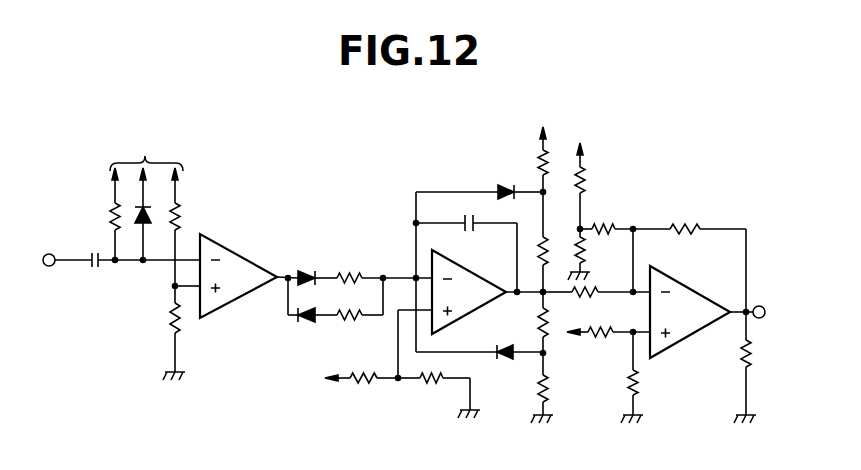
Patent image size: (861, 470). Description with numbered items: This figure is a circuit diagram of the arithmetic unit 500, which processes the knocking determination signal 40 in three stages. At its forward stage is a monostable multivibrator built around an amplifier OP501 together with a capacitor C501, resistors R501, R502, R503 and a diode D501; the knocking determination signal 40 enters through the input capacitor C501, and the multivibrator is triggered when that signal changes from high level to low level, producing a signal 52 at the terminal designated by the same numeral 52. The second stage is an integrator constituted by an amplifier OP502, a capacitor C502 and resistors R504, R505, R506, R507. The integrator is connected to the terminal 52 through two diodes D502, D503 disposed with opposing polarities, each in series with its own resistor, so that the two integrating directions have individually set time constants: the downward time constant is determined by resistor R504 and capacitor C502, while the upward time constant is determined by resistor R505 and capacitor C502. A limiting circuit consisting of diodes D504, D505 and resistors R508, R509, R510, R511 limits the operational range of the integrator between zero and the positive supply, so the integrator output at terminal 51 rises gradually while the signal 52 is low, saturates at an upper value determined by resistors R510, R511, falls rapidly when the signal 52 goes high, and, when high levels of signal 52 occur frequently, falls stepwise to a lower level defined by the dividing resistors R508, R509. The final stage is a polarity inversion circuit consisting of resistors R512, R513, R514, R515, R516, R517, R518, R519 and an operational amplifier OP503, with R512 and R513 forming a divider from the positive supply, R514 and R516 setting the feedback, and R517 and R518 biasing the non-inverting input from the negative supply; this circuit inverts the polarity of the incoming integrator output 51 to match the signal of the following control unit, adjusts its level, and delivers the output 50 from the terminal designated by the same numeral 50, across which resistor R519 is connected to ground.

The arithmetic unit 500 is at (300, 177).
The knocking determination signal 40 is at (49, 266).
The terminal (monostable multivibrator output signal) 52 is at (287, 275).
The terminal (integrator output signal) 51 is at (557, 283).
The terminal (output) 50 is at (763, 318).
The capacitor C501 is at (95, 268).
The capacitor C502 is at (468, 212).
The resistor R501 is at (112, 215).
The resistor R502 is at (180, 214).
The resistor R503 is at (172, 318).
The resistor R504 is at (352, 272).
The resistor R505 is at (352, 317).
The resistor R506 is at (360, 384).
The resistor R507 is at (436, 384).
The resistor R508 is at (541, 148).
The resistor R509 is at (540, 244).
The resistor R510 is at (546, 326).
The resistor R511 is at (547, 386).
The resistor R512 is at (583, 182).
The resistor R513 is at (583, 242).
The resistor R514 is at (600, 222).
The resistor R515 is at (585, 296).
The resistor R516 is at (687, 224).
The resistor R517 is at (600, 337).
The resistor R518 is at (636, 379).
The resistor R519 is at (748, 360).
The diode D501 is at (141, 224).
The diode D502 is at (306, 270).
The diode D503 is at (306, 323).
The diode D504 is at (503, 185).
The diode D505 is at (503, 358).
The amplifier OP501 is at (240, 250).
The amplifier OP502 is at (484, 304).
The operational amplifier OP503 is at (692, 331).